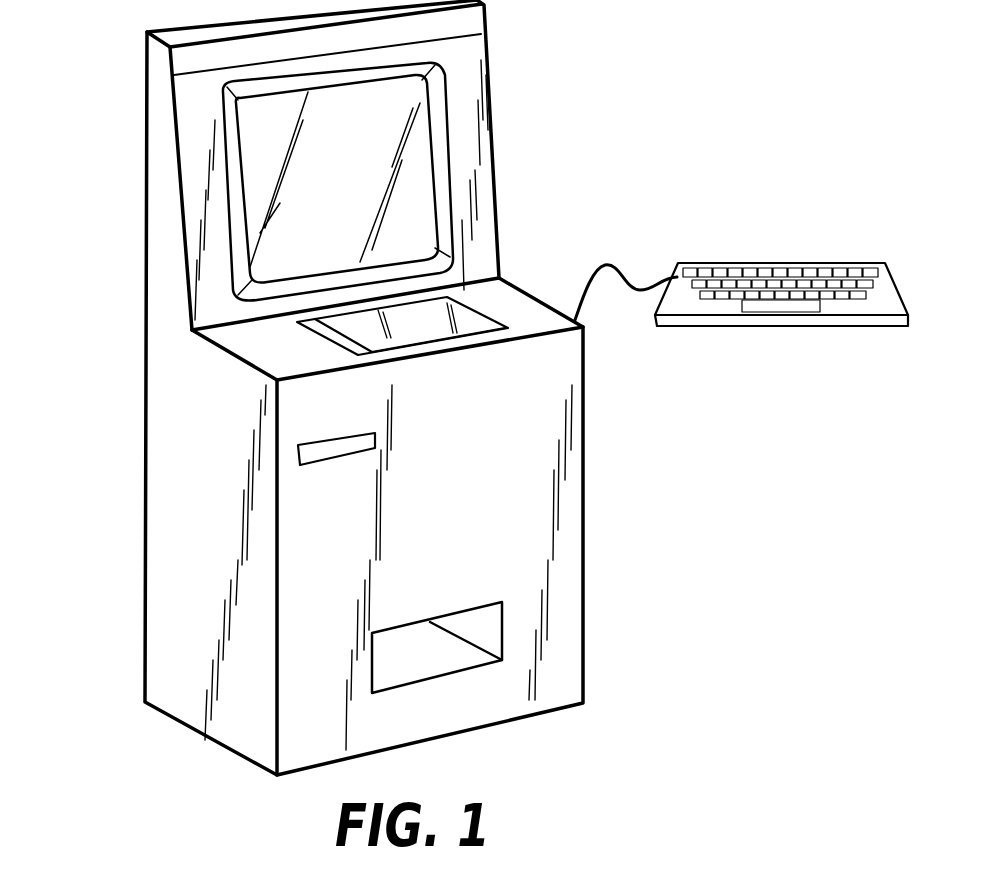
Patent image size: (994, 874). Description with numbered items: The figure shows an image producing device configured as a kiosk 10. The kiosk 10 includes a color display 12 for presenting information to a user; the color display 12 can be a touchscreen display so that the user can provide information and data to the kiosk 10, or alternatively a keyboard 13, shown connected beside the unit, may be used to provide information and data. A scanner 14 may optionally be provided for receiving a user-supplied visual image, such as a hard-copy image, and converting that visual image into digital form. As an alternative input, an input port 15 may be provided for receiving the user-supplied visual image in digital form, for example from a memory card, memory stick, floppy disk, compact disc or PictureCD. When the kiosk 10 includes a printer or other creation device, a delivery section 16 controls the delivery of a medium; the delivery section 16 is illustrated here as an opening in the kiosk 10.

The kiosk 10 is at (157, 125).
The color display 12 is at (417, 147).
The keyboard 13 is at (760, 263).
The scanner 14 is at (475, 323).
The input port 15 is at (352, 433).
The delivery section 16 is at (482, 623).